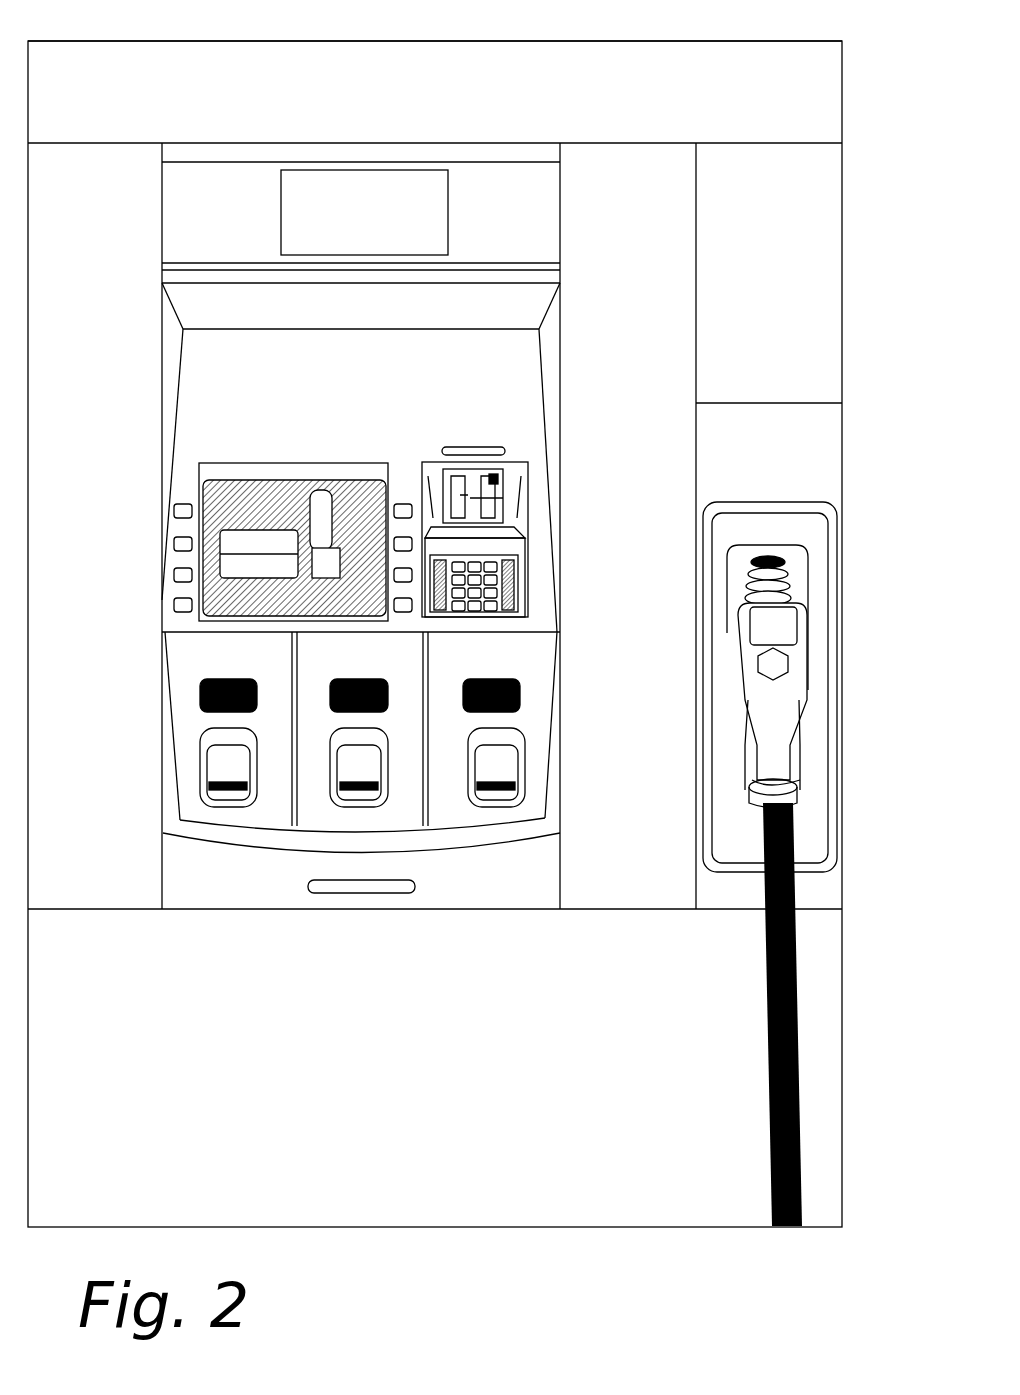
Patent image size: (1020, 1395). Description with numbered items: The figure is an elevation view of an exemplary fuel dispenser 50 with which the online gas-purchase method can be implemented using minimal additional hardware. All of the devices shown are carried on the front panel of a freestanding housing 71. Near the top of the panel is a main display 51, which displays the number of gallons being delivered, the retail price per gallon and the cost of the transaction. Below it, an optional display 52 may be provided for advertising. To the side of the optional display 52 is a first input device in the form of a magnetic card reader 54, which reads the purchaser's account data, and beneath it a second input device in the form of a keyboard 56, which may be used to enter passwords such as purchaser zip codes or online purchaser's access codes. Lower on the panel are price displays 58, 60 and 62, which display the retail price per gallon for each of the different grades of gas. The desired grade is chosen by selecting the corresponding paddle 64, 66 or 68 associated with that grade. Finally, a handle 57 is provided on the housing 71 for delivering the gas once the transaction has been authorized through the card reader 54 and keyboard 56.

The fuel dispenser 50 is at (232, 90).
The freestanding housing 71 is at (740, 70).
The main display 51 is at (330, 183).
The optional display 52 is at (222, 497).
The magnetic card reader 54 is at (500, 482).
The keyboard 56 is at (478, 555).
The handle 57 is at (814, 712).
The price display 58 is at (210, 680).
The price display 60 is at (345, 680).
The price display 62 is at (478, 680).
The paddle 64 is at (236, 790).
The paddle 66 is at (368, 790).
The paddle 68 is at (490, 790).